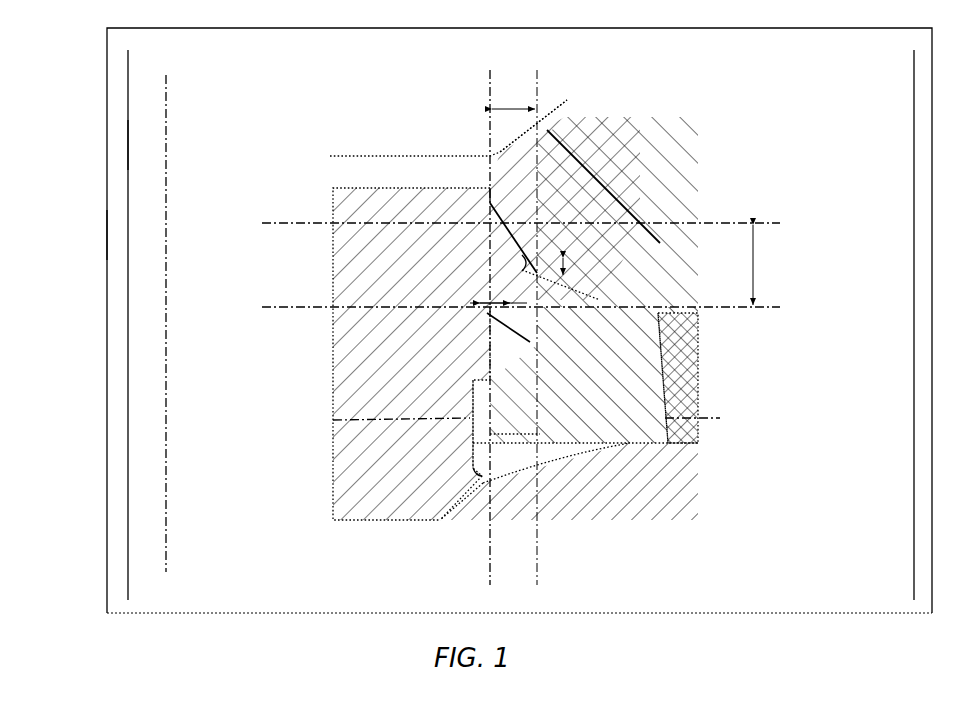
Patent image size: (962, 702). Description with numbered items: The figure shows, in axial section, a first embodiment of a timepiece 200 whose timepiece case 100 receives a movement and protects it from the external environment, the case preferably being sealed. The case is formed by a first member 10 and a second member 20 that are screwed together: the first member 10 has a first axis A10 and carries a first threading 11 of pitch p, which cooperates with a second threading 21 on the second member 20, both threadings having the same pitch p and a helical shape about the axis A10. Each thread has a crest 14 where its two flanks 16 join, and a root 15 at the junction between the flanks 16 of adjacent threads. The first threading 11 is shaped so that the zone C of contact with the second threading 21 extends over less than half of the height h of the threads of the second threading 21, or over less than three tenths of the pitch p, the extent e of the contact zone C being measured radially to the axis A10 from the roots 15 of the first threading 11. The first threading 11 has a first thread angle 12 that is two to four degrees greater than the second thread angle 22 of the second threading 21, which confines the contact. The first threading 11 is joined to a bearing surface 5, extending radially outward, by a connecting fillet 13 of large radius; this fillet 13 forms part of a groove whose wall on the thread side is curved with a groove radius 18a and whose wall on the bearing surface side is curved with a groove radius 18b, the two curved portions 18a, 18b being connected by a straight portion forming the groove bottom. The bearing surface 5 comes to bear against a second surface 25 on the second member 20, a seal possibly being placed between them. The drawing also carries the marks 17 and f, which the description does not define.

The bearing surface 5 is at (660, 435).
The first member 10 is at (385, 480).
The first threading 11 is at (488, 200).
The first thread angle 12 is at (500, 236).
The connecting fillet 13 is at (487, 485).
The crest 14 is at (565, 262).
The root 15 is at (478, 305).
The flank 16 is at (520, 273).
The pin groove wall 17 is at (473, 422).
The groove radius 18a is at (567, 443).
The groove radius 18b is at (498, 463).
The second member 20 is at (672, 193).
The second threading 21 is at (521, 150).
The second thread angle 22 is at (680, 330).
The second surface 25 is at (668, 413).
The timepiece case 100 is at (128, 145).
The timepiece 200 is at (107, 237).
The first axis A10 is at (167, 113).
The height of the threads h is at (513, 99).
The pitch p is at (762, 265).
The extent of the contact zone e is at (498, 314).
The flank gap f is at (522, 258).
The zone of contact C is at (603, 163).